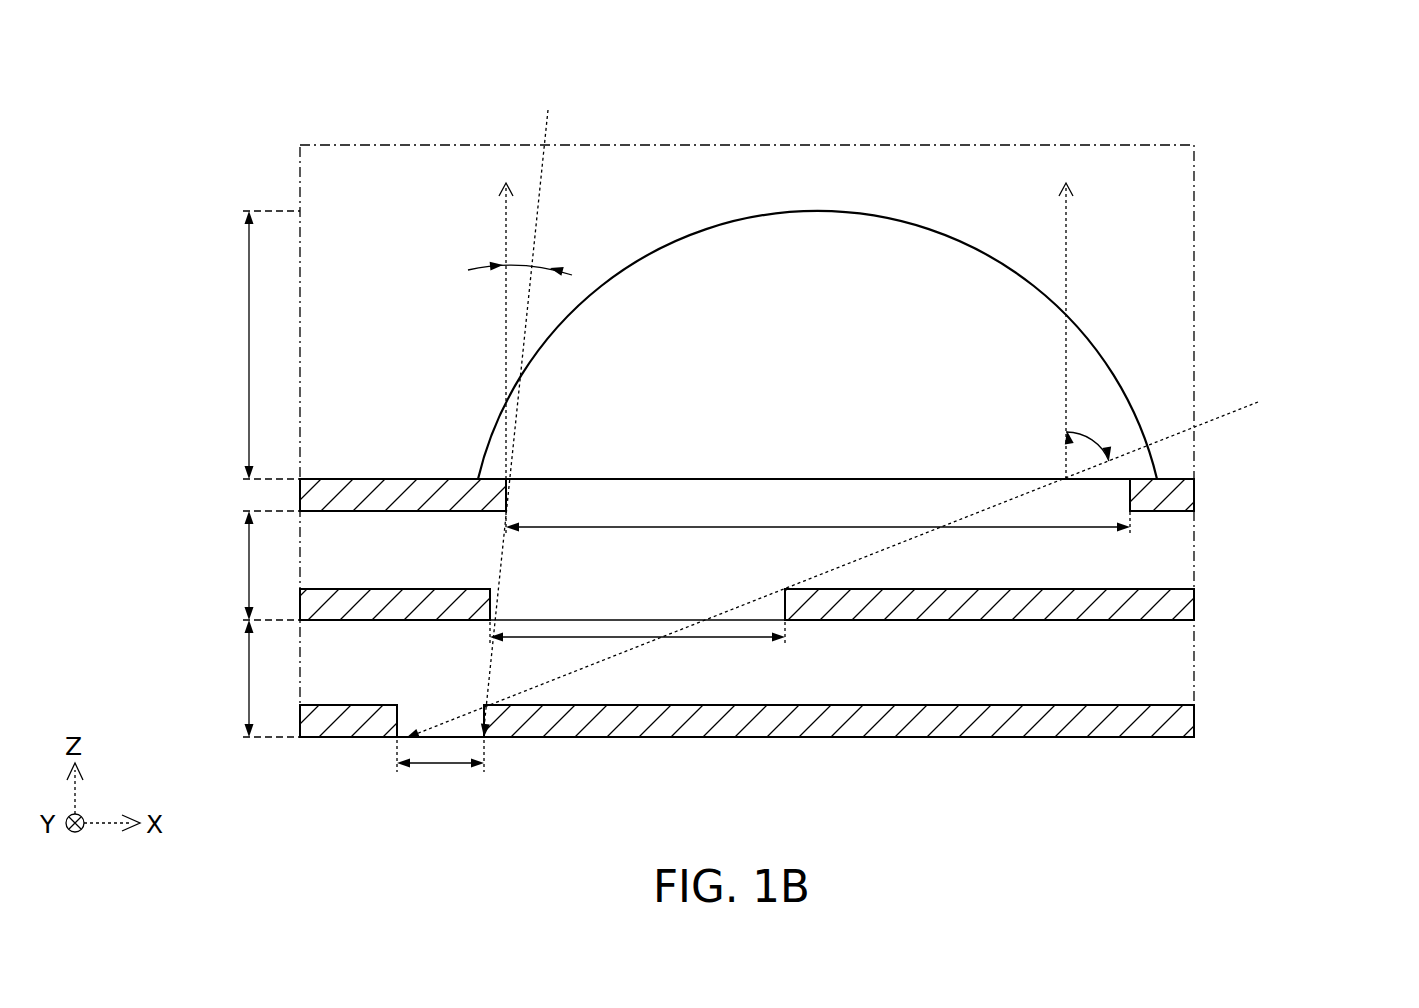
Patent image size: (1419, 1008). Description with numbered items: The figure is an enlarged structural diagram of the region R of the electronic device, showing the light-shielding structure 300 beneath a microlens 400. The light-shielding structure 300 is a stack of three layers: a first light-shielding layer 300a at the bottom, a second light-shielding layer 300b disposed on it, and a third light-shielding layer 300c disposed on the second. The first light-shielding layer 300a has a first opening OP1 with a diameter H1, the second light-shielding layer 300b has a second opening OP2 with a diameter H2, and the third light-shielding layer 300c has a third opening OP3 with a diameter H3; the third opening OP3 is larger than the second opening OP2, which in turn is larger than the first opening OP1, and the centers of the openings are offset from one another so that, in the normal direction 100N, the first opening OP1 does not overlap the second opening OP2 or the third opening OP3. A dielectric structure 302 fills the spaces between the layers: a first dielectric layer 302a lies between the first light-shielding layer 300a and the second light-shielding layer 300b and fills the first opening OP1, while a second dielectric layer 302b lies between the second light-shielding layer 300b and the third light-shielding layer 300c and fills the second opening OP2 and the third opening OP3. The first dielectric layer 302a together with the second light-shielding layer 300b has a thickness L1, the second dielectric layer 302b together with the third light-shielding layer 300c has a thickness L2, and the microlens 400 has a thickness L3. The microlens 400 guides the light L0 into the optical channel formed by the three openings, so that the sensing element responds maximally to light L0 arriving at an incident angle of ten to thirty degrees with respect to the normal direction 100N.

The light-shielding structure 300 is at (1343, 120).
The first light-shielding layer 300a is at (1180, 721).
The second light-shielding layer 300b is at (1180, 606).
The third light-shielding layer 300c is at (1180, 496).
The dielectric structure 302 is at (1343, 30).
The first dielectric layer 302a is at (1180, 663).
The second dielectric layer 302b is at (1180, 553).
The microlens 400 is at (1100, 385).
The normal direction 100N is at (783, 318).
The region R is at (355, 143).
The light L0 is at (848, 413).
The first opening OP1 is at (422, 700).
The second opening OP2 is at (655, 584).
The third opening OP3 is at (930, 489).
The diameter of the first opening H1 is at (440, 769).
The diameter of the second opening H2 is at (637, 646).
The diameter of the third opening H3 is at (818, 535).
The thickness L1 is at (254, 678).
The thickness L2 is at (254, 549).
The thickness L3 is at (254, 345).